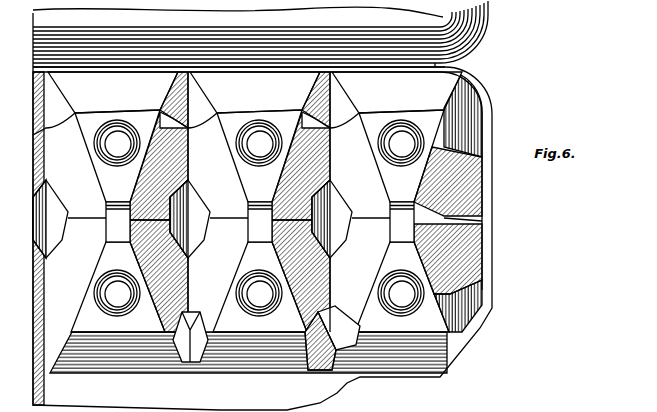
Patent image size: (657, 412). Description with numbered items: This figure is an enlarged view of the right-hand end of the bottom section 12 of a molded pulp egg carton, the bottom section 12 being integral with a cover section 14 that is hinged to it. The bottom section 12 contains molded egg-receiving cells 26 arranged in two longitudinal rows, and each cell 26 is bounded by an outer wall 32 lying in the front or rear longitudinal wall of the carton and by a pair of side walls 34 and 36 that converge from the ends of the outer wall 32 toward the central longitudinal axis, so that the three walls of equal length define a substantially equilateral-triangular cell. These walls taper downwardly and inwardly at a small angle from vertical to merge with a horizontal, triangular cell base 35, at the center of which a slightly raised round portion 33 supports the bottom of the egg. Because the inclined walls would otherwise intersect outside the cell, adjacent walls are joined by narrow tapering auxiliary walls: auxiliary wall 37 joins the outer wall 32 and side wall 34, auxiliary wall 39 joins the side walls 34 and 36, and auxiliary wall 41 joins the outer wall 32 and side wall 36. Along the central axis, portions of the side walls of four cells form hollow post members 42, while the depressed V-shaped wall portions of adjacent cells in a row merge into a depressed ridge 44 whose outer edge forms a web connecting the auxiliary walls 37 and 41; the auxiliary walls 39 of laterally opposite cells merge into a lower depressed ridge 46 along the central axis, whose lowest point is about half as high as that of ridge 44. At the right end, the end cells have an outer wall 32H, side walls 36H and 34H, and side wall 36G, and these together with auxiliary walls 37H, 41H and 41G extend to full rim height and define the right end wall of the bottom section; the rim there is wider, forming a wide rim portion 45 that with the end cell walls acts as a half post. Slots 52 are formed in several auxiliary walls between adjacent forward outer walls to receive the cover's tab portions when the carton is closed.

The bottom section 12 is at (500, 102).
The cover section 14 is at (492, 26).
The egg-receiving cell 26 is at (231, 103).
The outer wall 32 is at (255, 202).
The outer wall of end cell 32H is at (397, 202).
The round portion 33 is at (97, 147).
The side wall 34 is at (297, 150).
The side wall of end cell 34H is at (452, 178).
The cell base 35 is at (120, 178).
The side wall 36 is at (201, 202).
The side wall of end cell 36H is at (346, 202).
The side wall of end cell 36G is at (461, 257).
The auxiliary wall 37 is at (166, 101).
The auxiliary wall of end cell 37H is at (474, 128).
The auxiliary wall 39 is at (261, 203).
The auxiliary wall 41 is at (198, 108).
The auxiliary wall of end cell 41H is at (347, 104).
The auxiliary wall of end cell 41G is at (472, 300).
The hollow post member 42 is at (57, 219).
The depressed ridge 44 is at (176, 97).
The wide rim portion 45 is at (463, 218).
The depressed ridge 46 is at (248, 218).
The slot 52 is at (190, 352).